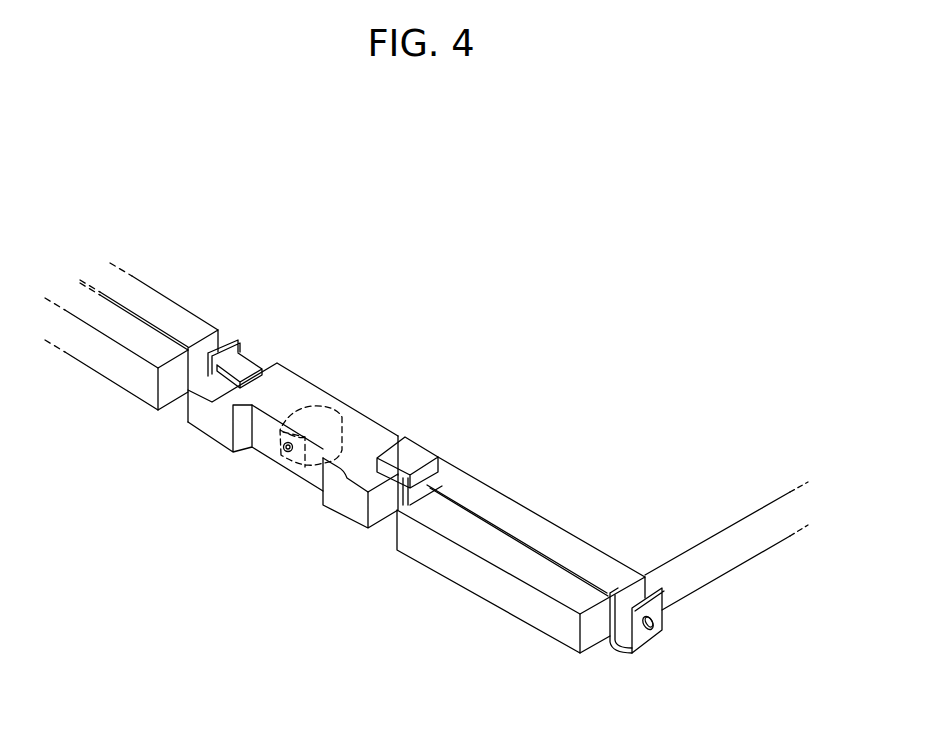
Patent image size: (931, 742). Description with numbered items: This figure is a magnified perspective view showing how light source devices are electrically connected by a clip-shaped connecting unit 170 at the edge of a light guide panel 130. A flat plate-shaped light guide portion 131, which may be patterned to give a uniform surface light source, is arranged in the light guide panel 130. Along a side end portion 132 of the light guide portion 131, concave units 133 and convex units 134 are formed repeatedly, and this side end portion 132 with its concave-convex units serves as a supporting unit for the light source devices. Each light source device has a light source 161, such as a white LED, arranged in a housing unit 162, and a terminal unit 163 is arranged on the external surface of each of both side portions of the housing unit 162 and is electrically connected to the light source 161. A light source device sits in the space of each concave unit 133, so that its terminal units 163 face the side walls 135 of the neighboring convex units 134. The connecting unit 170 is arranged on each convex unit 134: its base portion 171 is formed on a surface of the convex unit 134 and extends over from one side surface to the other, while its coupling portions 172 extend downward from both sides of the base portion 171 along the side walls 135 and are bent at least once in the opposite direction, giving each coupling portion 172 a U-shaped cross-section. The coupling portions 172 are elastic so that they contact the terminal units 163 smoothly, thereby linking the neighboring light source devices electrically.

The light guide panel 130 is at (738, 585).
The light guide portion 131 is at (562, 442).
The side end portion 132 is at (497, 583).
The concave unit 133 is at (398, 512).
The convex unit 134 is at (455, 562).
The side wall 135 is at (173, 393).
The light source 161 is at (322, 418).
The housing unit 162 is at (265, 445).
The terminal unit 163 is at (410, 457).
The connecting unit 170 is at (183, 195).
The base portion 171 is at (153, 302).
The coupling portion 172 is at (235, 343).